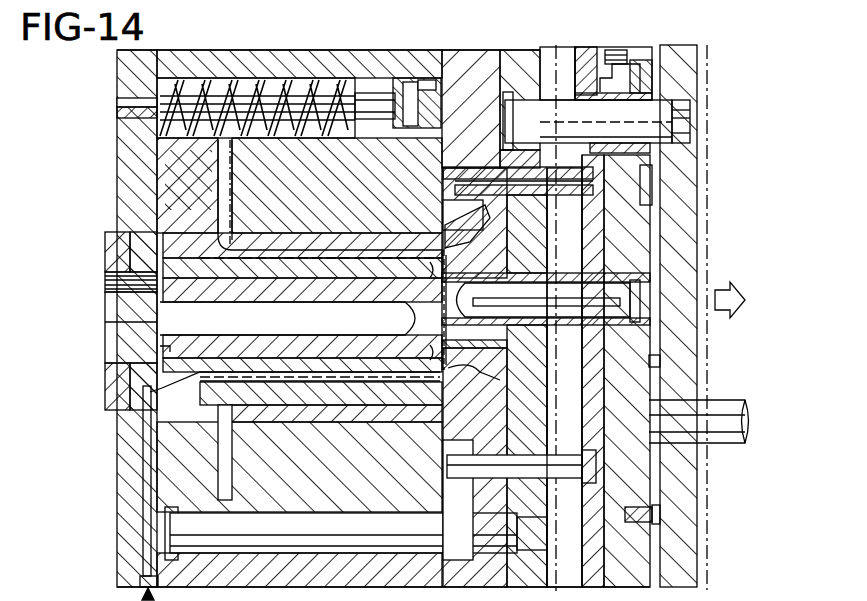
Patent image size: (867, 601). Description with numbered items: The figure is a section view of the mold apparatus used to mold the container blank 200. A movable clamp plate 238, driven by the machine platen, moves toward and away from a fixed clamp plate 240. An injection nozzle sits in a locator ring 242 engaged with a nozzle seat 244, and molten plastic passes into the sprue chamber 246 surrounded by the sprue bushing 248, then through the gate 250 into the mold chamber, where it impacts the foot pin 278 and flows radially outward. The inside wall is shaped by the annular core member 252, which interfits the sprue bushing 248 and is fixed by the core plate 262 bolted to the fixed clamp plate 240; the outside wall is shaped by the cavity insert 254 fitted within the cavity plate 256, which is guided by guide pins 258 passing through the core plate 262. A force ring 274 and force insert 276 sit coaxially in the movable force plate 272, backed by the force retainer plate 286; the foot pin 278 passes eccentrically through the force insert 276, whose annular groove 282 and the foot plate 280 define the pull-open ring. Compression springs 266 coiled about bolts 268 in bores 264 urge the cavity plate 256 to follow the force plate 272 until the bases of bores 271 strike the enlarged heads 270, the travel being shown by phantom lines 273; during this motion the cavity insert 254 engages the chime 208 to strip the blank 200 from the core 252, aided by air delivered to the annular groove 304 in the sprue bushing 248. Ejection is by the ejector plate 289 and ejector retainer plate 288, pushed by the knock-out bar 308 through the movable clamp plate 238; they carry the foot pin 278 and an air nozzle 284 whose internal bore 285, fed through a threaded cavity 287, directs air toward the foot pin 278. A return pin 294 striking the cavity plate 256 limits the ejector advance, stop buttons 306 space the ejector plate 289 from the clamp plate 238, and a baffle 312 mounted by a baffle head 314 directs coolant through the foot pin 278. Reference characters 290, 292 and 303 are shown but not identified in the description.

The container blank 200 is at (314, 250).
The chime 208 is at (425, 230).
The movable clamp plate 238 is at (688, 332).
The fixed clamp plate 240 is at (120, 150).
The locator ring 242 is at (105, 386).
The nozzle seat 244 is at (158, 314).
The sprue chamber 246 is at (248, 330).
The sprue bushing 248 is at (168, 350).
The gate 250 is at (415, 320).
The annular core member 252 is at (165, 243).
The cavity insert 254 is at (288, 420).
The cavity plate 256 is at (352, 470).
The guide pin 258 is at (356, 533).
The core plate 262 is at (165, 174).
The bore 264 is at (286, 88).
The compression spring 266 is at (240, 92).
The bolt 268 is at (328, 100).
The motion limiting head 270 is at (410, 98).
The bore 271 is at (420, 88).
The movable force plate 272 is at (462, 56).
The phantom lines 273 is at (205, 58).
The force ring 274 is at (498, 232).
The force insert 276 is at (518, 376).
The foot pin 278 is at (655, 362).
The foot plate 280 is at (508, 396).
The annular groove 282 is at (500, 342).
The air nozzle 284 is at (525, 172).
The internal bore 285 is at (562, 182).
The force retainer plate 286 is at (525, 54).
The threaded cavity 287 is at (618, 50).
The ejector retainer plate 288 is at (583, 60).
The ejector plate 289 is at (640, 184).
The passage 290 is at (555, 98).
The fitting 292 is at (635, 75).
The return pin 294 is at (566, 480).
The sheet 303 is at (192, 368).
The annular groove 304 is at (420, 262).
The stop button 306 is at (655, 516).
The knock-out bar 308 is at (728, 402).
The baffle 312 is at (600, 290).
The baffle head 314 is at (650, 290).